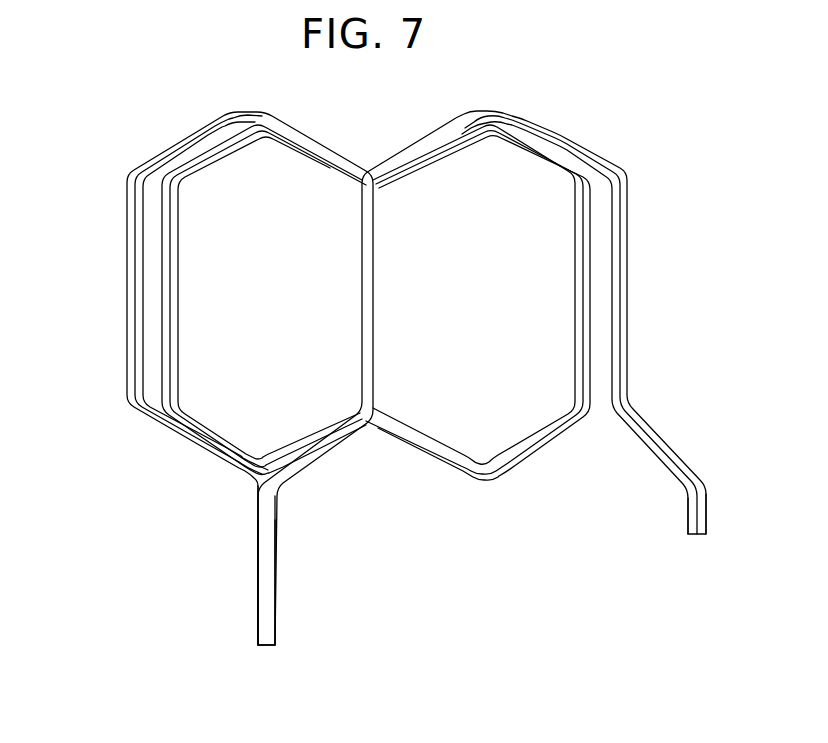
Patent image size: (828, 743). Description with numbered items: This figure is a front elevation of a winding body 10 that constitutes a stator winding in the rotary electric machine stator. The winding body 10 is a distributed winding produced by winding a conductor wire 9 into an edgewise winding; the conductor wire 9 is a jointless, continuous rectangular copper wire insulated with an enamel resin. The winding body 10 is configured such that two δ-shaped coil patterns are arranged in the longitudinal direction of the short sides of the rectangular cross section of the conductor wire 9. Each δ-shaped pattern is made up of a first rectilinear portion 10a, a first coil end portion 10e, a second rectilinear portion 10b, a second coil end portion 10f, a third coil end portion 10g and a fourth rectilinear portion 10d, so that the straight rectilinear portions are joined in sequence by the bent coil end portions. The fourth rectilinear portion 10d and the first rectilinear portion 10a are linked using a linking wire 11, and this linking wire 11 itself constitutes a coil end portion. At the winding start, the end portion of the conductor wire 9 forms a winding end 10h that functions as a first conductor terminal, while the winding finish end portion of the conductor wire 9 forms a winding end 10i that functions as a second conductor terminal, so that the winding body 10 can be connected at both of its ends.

The winding body 10 is at (110, 79).
The first rectilinear portion 10a is at (368, 350).
The second rectilinear portion 10b is at (163, 315).
The fourth rectilinear portion 10d is at (588, 342).
The first coil end portion 10e is at (188, 136).
The second coil end portion 10f is at (213, 437).
The third coil end portion 10g is at (577, 148).
The winding end 10h is at (277, 580).
The winding end 10i is at (695, 514).
The linking wire 11 is at (438, 447).
The conductor wire 9 is at (263, 540).